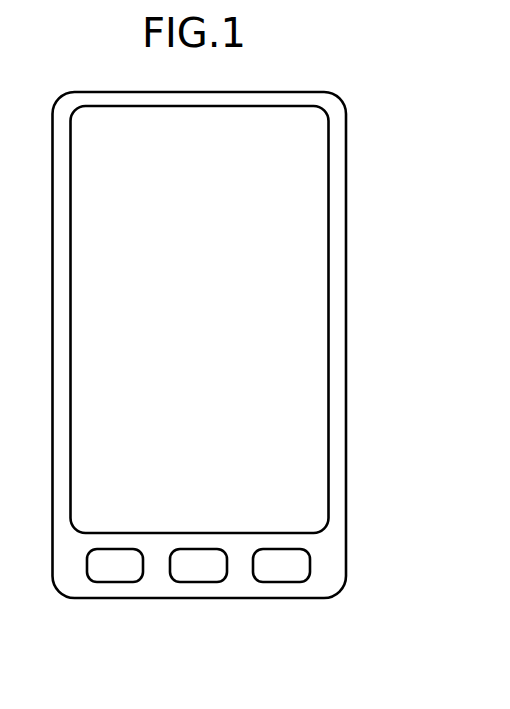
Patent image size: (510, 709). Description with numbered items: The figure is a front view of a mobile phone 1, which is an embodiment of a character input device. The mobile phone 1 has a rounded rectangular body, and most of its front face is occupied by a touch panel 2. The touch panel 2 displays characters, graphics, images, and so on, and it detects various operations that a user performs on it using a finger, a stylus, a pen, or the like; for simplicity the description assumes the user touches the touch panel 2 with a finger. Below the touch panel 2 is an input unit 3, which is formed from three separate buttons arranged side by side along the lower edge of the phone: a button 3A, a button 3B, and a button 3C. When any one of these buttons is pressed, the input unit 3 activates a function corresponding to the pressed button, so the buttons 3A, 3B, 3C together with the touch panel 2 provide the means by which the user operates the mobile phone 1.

The mobile phone 1 is at (393, 153).
The touch panel 2 is at (328, 337).
The input unit 3 is at (198, 621).
The button 3A is at (117, 582).
The button 3B is at (200, 582).
The button 3C is at (281, 598).